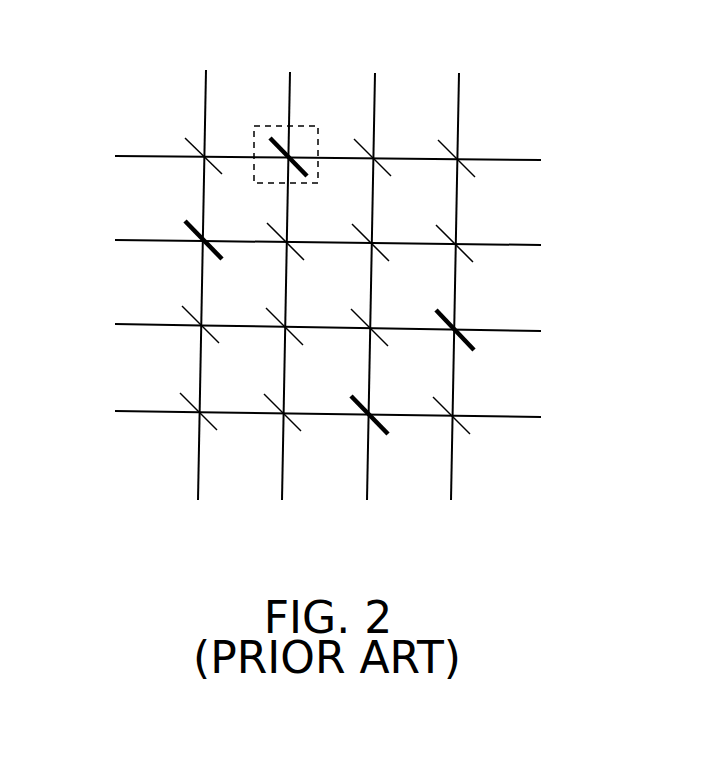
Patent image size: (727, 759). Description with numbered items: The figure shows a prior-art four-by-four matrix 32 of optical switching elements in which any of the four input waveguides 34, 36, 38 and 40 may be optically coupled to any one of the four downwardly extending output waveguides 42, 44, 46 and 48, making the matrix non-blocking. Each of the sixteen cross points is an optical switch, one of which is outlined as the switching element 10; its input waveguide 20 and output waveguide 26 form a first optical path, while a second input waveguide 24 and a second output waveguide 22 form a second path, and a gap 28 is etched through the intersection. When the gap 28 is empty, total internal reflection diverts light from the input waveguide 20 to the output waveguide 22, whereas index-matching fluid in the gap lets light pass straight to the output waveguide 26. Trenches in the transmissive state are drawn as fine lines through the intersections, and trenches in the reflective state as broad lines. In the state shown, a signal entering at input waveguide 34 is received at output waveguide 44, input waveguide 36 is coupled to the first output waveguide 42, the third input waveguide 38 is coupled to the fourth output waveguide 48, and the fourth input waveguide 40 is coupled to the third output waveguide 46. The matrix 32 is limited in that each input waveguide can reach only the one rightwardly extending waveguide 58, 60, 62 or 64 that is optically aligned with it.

The switching element 10 is at (297, 126).
The input waveguide 20 is at (225, 154).
The second output waveguide 22 is at (287, 218).
The second input waveguide 24 is at (289, 94).
The output waveguide 26 is at (358, 158).
The gap 28 is at (301, 163).
The 4×4 matrix 32 is at (602, 119).
The input waveguide 34 is at (138, 153).
The input waveguide 36 is at (140, 238).
The third input waveguide 38 is at (139, 323).
The fourth input waveguide 40 is at (136, 409).
The first output waveguide 42 is at (199, 461).
The output waveguide 44 is at (283, 462).
The third output waveguide 46 is at (368, 463).
The fourth output waveguide 48 is at (452, 464).
The rightwardly extending waveguide 58 is at (507, 162).
The rightwardly extending waveguide 60 is at (505, 247).
The rightwardly extending waveguide 62 is at (503, 333).
The rightwardly extending waveguide 64 is at (503, 418).